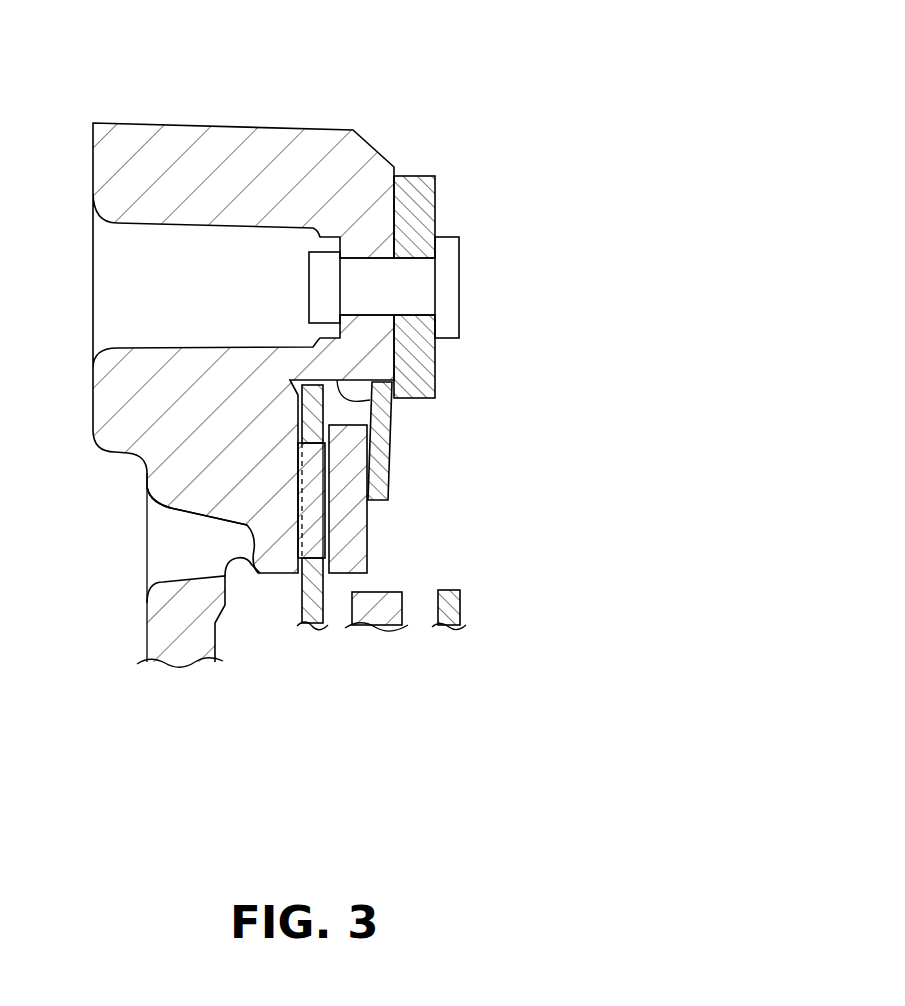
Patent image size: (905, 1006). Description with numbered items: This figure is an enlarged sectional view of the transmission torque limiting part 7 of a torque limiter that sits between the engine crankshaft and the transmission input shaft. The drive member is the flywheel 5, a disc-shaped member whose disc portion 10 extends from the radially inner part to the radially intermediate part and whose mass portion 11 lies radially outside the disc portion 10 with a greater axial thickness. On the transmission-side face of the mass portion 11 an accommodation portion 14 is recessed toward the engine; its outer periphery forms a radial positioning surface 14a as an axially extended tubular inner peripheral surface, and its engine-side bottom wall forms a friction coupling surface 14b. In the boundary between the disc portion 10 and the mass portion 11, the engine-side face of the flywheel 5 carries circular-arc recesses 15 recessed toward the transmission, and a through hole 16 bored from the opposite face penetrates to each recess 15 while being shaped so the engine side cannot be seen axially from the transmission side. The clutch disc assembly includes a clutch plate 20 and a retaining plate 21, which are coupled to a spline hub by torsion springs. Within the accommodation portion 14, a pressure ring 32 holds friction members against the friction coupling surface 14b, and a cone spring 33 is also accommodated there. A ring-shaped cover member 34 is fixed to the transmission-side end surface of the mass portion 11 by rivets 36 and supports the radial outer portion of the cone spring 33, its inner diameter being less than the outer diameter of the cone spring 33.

The flywheel 5 is at (382, 85).
The transmission torque limiting part 7 is at (538, 390).
The disc portion 10 is at (213, 643).
The mass portion 11 is at (227, 138).
The accommodation portion 14 is at (431, 449).
The radial positioning surface 14a is at (370, 400).
The friction coupling surface 14b is at (302, 503).
The recess 15 is at (180, 512).
The through hole 16 is at (237, 558).
The clutch plate 20 is at (317, 612).
The retaining plate 21 is at (453, 603).
The pressure ring 32 is at (353, 558).
The cone spring 33 is at (382, 465).
The cover member 34 is at (420, 198).
The rivet 36 is at (445, 268).